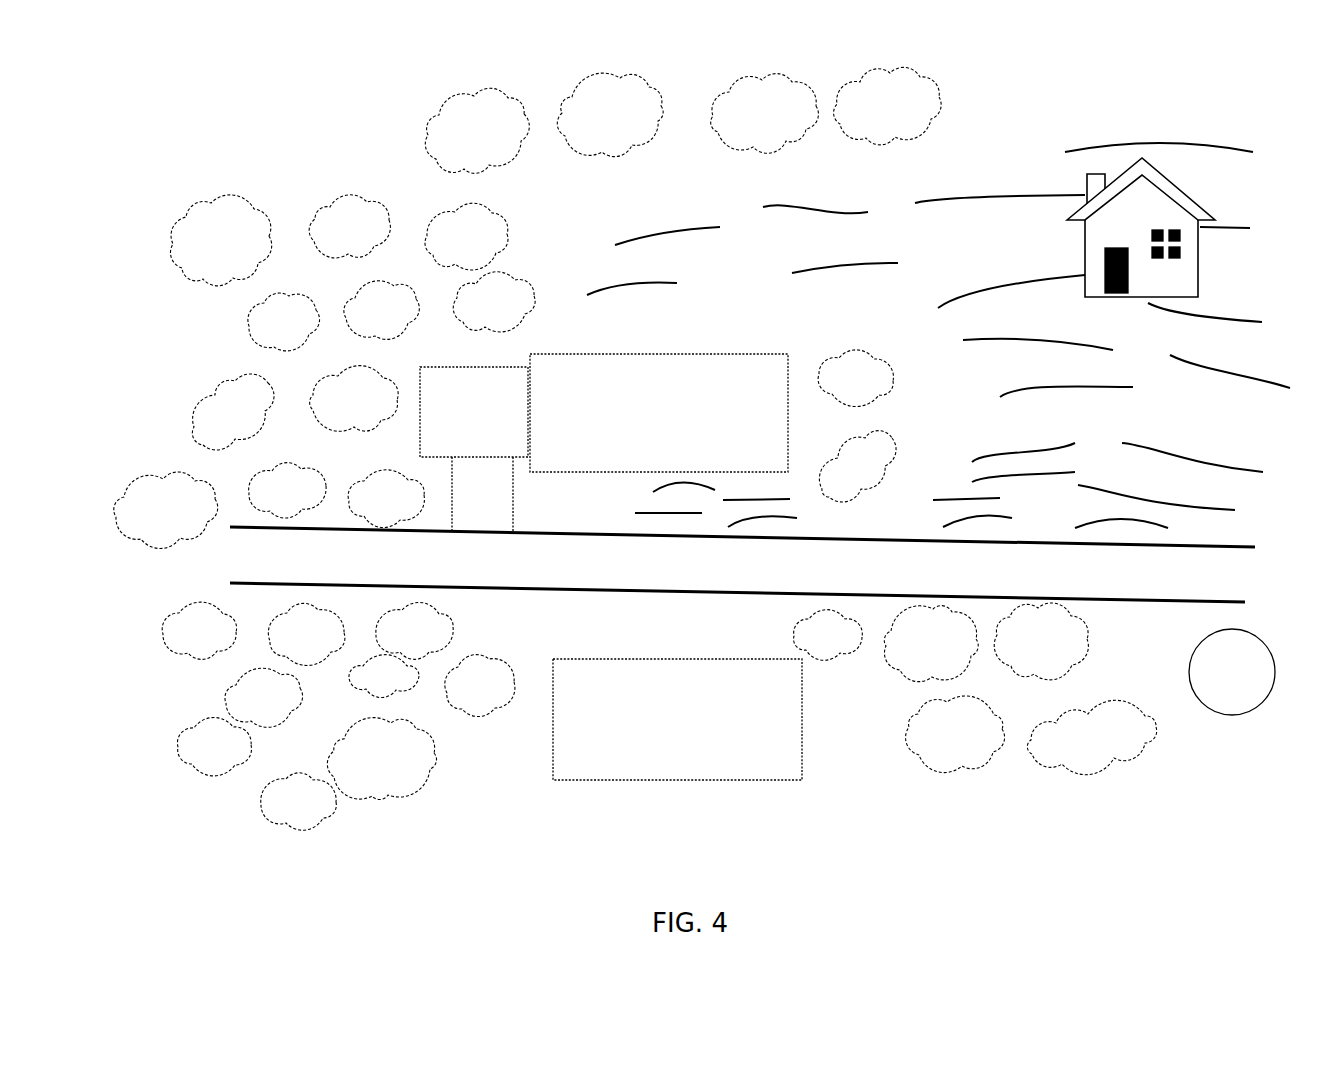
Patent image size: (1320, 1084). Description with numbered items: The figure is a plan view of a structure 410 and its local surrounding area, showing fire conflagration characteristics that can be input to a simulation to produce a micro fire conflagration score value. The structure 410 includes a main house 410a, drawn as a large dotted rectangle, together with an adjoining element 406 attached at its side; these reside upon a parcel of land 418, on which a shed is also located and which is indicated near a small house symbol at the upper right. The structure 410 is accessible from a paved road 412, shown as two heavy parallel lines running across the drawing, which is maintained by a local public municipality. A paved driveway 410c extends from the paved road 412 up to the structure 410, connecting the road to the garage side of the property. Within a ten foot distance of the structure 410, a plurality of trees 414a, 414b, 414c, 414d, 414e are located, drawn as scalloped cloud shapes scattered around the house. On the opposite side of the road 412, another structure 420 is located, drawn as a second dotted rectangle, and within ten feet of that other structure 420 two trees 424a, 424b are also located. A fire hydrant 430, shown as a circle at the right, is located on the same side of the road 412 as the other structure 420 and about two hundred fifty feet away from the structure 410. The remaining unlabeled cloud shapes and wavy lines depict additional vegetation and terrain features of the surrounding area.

The device/node 406 is at (457, 431).
The structure 410 is at (620, 405).
The main house 410a is at (633, 434).
The paved driveway 410c is at (458, 514).
The paved road 412 is at (882, 572).
The tree 414a is at (360, 514).
The tree 414b is at (328, 414).
The tree 414c is at (468, 316).
The tree 414d is at (830, 391).
The tree 414e is at (833, 479).
The parcel of land 418 is at (1195, 200).
The other structure 420 is at (662, 709).
The tree 424a is at (453, 701).
The tree 424b is at (803, 647).
The fire hydrant 430 is at (1213, 684).